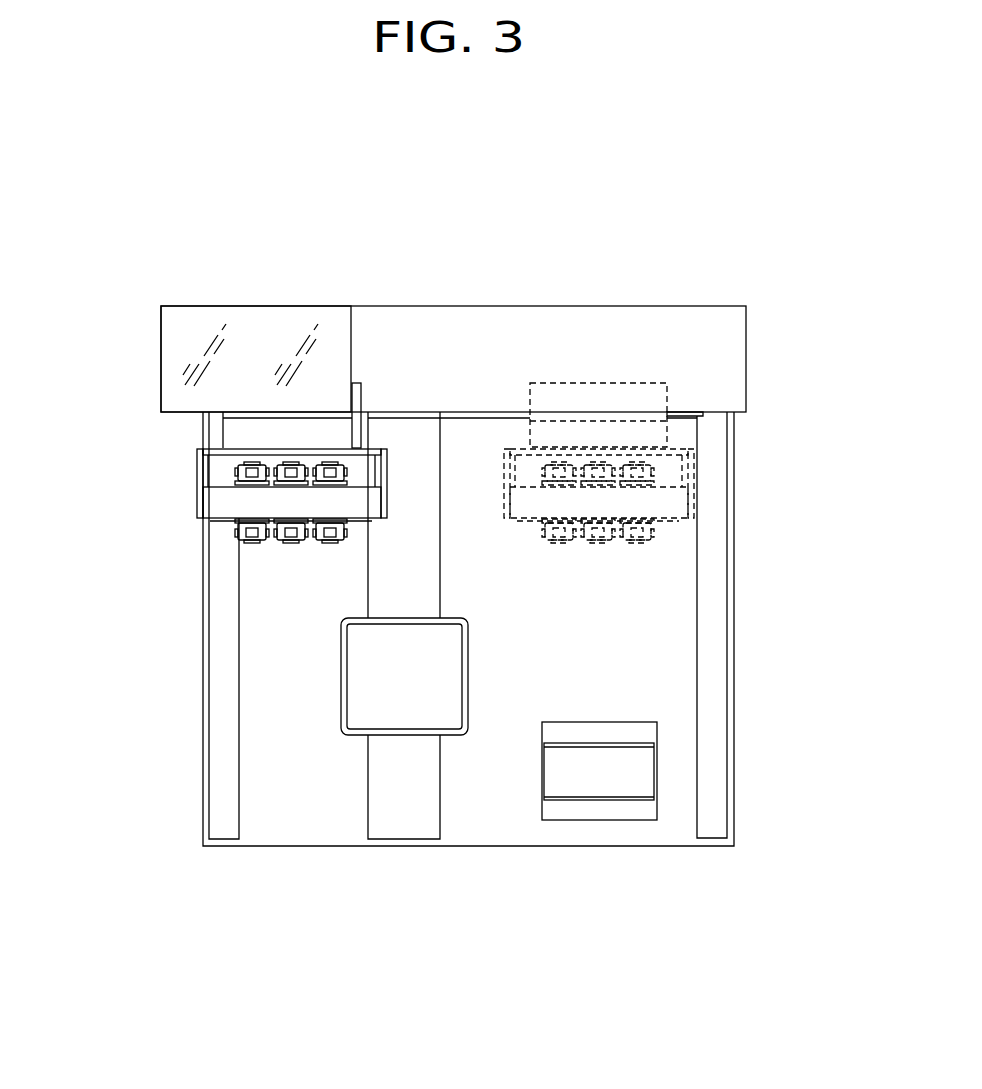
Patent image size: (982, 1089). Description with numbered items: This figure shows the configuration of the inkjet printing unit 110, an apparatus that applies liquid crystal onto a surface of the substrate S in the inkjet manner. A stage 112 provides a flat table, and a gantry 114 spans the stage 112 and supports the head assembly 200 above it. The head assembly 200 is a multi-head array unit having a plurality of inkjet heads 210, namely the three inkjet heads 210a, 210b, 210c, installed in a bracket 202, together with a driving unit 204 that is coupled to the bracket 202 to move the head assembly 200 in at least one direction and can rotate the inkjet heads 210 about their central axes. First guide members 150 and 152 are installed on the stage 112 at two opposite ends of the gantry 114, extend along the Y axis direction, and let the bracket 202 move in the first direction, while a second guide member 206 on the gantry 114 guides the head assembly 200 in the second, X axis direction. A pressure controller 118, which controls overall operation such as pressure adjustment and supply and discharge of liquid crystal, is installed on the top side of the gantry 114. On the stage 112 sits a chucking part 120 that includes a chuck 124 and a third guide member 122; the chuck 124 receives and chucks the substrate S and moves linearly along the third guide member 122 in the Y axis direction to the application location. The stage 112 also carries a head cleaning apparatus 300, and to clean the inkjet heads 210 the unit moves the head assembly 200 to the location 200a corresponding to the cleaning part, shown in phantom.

The inkjet printing unit 110 is at (620, 216).
The stage 112 is at (305, 826).
The gantry 114 is at (756, 346).
The pressure controller 118 is at (271, 323).
The third guide member 122 is at (448, 475).
The chuck 124 is at (332, 700).
The substrate S is at (347, 672).
The chucking part 120 is at (315, 737).
The first guide member 150 is at (202, 647).
The first guide member 152 is at (736, 694).
The head assembly 200 is at (172, 504).
The location corresponding to the cleaning part 200a is at (702, 490).
The bracket 202 is at (187, 469).
The driving unit 204 is at (190, 432).
The second guide member 206 is at (688, 418).
The inkjet heads 210 is at (184, 569).
The inkjet head 210a is at (252, 546).
The inkjet head 210b is at (291, 546).
The inkjet head 210c is at (330, 546).
The head cleaning apparatus 300 is at (668, 773).